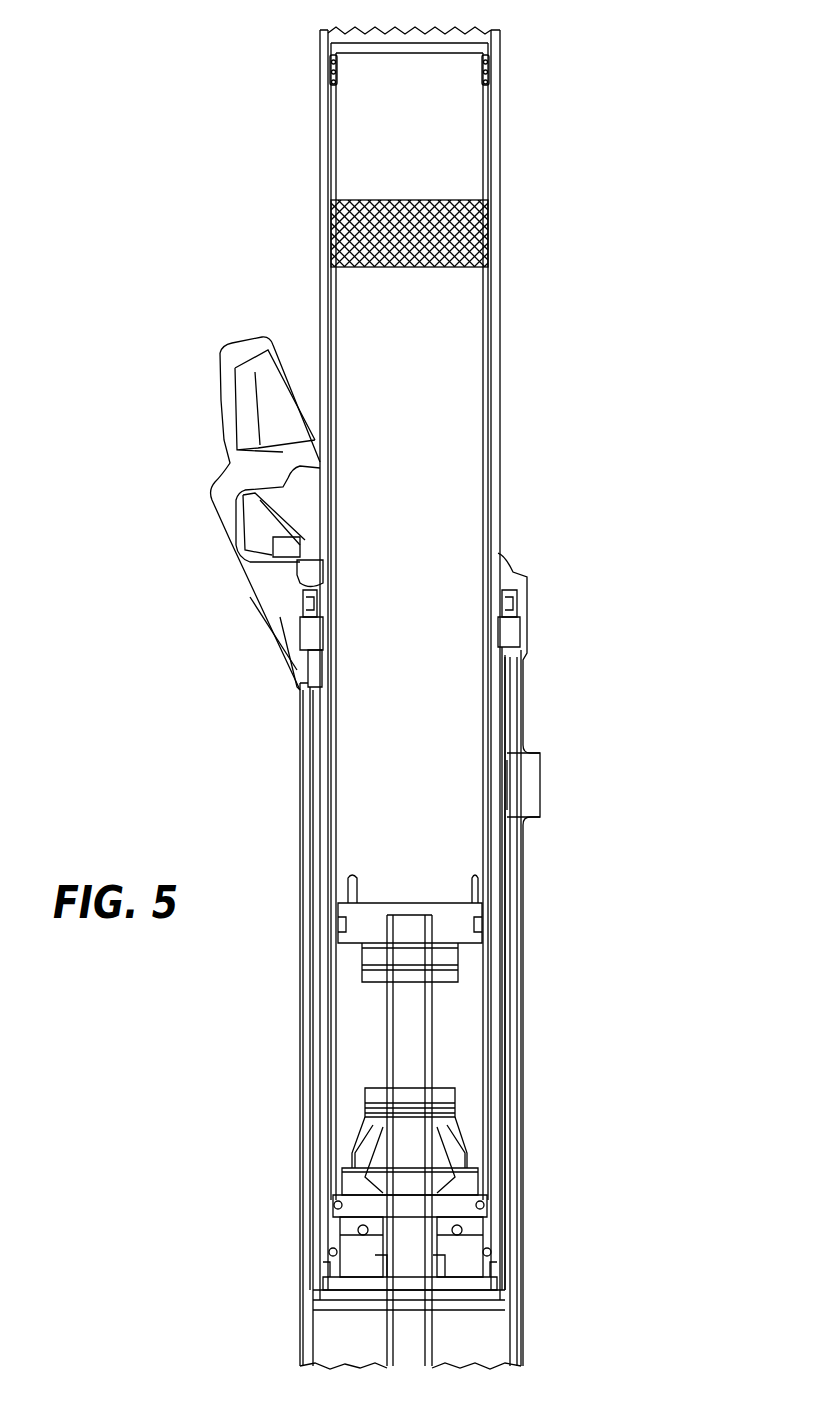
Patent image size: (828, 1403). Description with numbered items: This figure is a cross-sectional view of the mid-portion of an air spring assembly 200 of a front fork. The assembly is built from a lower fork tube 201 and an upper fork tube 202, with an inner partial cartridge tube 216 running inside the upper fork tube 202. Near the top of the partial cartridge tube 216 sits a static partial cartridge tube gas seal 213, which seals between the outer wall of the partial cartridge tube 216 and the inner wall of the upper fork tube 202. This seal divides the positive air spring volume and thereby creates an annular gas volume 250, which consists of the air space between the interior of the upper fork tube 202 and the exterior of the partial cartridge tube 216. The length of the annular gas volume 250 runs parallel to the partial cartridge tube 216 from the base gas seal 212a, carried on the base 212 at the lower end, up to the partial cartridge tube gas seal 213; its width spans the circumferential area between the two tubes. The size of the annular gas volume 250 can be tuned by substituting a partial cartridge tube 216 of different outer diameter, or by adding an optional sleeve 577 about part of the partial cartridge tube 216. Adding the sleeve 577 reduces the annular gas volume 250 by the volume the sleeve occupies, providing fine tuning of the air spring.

The air spring assembly 200 is at (614, 30).
The lower fork tube 201 is at (521, 1022).
The upper fork tube 202 is at (500, 520).
The base 212 is at (327, 1267).
The base gas seal 212a is at (330, 1208).
The partial cartridge tube gas seal 213 is at (490, 75).
The partial cartridge tube 216 is at (330, 50).
The annular gas volume 250 is at (498, 308).
The sleeve 577 is at (458, 200).